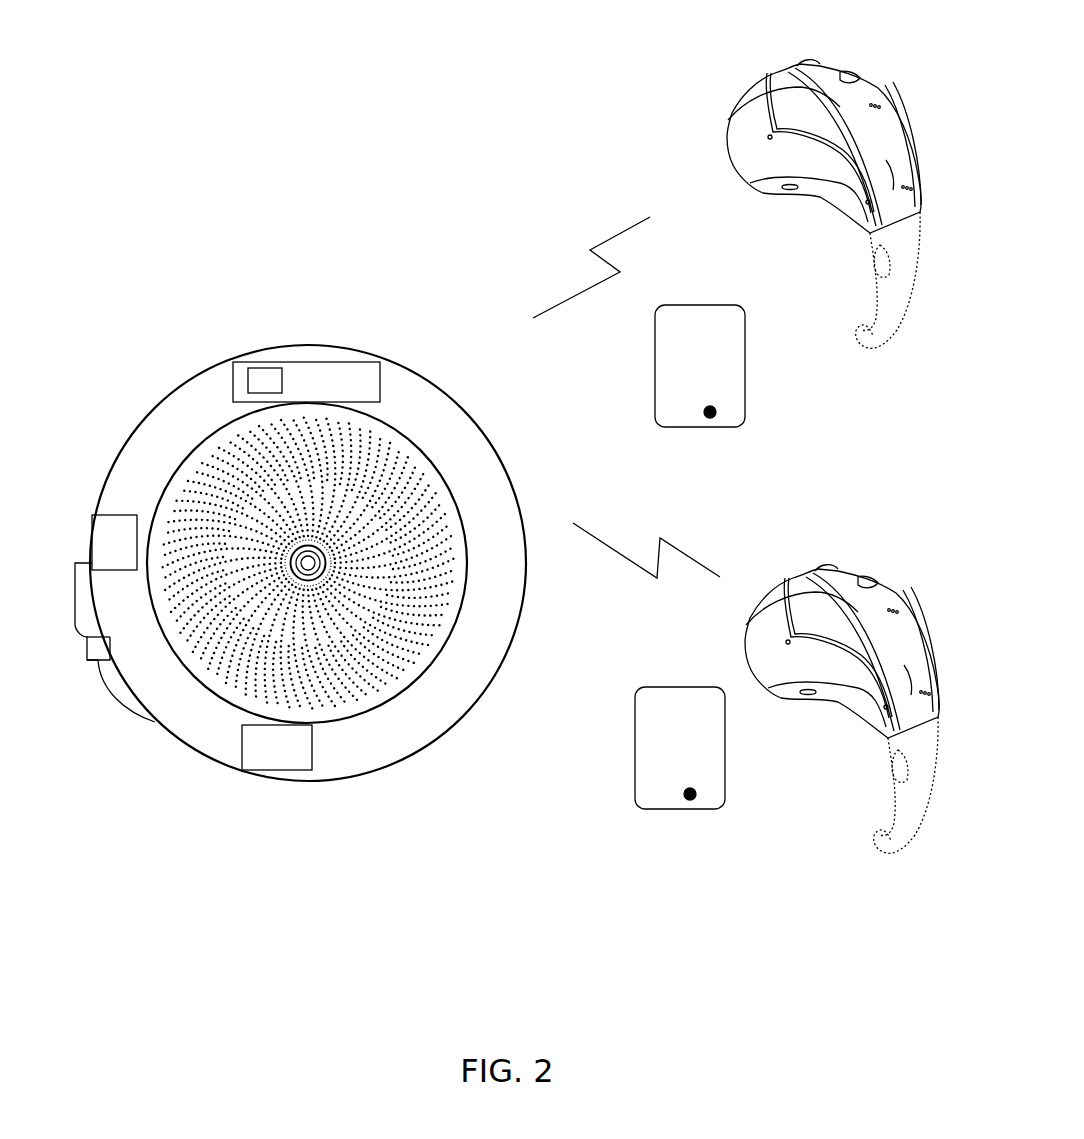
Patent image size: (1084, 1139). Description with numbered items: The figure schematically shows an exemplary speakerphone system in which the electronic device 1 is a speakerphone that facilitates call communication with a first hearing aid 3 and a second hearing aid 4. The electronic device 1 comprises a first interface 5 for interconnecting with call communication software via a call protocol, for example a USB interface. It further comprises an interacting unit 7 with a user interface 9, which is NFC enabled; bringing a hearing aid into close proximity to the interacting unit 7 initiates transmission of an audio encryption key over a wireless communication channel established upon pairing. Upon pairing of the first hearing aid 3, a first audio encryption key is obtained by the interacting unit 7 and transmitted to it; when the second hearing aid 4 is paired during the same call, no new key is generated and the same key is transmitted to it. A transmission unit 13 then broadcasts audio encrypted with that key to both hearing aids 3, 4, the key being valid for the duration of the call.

The electronic device 1 is at (452, 398).
The hearing device 3 is at (748, 86).
The second hearing aid 4 is at (887, 588).
The first interface 5 is at (115, 515).
The interacting unit 7 is at (325, 362).
The user interface 9 is at (268, 368).
The transmission unit 13 is at (280, 772).